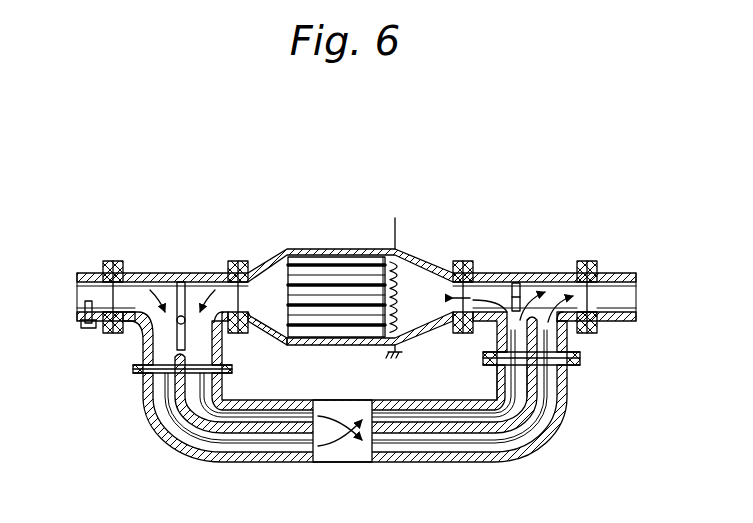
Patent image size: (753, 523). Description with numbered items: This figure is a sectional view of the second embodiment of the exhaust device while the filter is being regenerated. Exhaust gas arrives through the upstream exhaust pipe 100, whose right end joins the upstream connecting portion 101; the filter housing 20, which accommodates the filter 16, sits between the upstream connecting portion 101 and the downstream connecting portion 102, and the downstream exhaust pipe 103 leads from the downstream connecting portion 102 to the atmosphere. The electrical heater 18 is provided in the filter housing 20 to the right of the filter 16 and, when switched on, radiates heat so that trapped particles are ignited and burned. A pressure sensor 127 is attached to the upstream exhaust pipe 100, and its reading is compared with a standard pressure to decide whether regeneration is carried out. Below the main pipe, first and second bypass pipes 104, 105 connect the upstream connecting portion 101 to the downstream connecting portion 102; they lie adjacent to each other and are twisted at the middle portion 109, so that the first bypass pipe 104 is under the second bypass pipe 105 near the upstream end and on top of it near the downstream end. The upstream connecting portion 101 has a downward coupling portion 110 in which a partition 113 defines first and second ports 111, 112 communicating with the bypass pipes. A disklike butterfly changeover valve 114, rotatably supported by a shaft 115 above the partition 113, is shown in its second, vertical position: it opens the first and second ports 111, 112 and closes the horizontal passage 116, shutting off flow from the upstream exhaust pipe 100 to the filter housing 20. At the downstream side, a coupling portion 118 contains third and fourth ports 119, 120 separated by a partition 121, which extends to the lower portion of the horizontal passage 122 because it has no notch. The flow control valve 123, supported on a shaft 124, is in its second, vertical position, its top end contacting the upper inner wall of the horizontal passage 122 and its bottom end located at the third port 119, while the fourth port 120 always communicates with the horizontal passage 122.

The filter 16 is at (306, 275).
The electrical heater 18 is at (400, 270).
The filter housing 20 is at (345, 250).
The upstream exhaust pipe 100 is at (90, 276).
The upstream connecting portion 101 is at (186, 266).
The downstream connecting portion 102 is at (488, 266).
The downstream exhaust pipe 103 is at (628, 272).
The first bypass pipe 104 is at (174, 440).
The second bypass pipe 105 is at (272, 402).
The middle portion 109 is at (337, 455).
The coupling portion 110 is at (137, 360).
The first port 111 is at (147, 393).
The second port 112 is at (172, 407).
The partition 113 is at (208, 350).
The changeover valve 114 is at (176, 292).
The shaft 115 is at (146, 345).
The horizontal passage 116 is at (213, 288).
The coupling portion 118 is at (563, 330).
The third port 119 is at (492, 352).
The fourth port 120 is at (557, 373).
The partition 121 is at (570, 345).
The horizontal passage 122 is at (460, 278).
The flow control valve 123 is at (526, 292).
The shaft 124 is at (530, 292).
The pressure sensor 127 is at (84, 312).